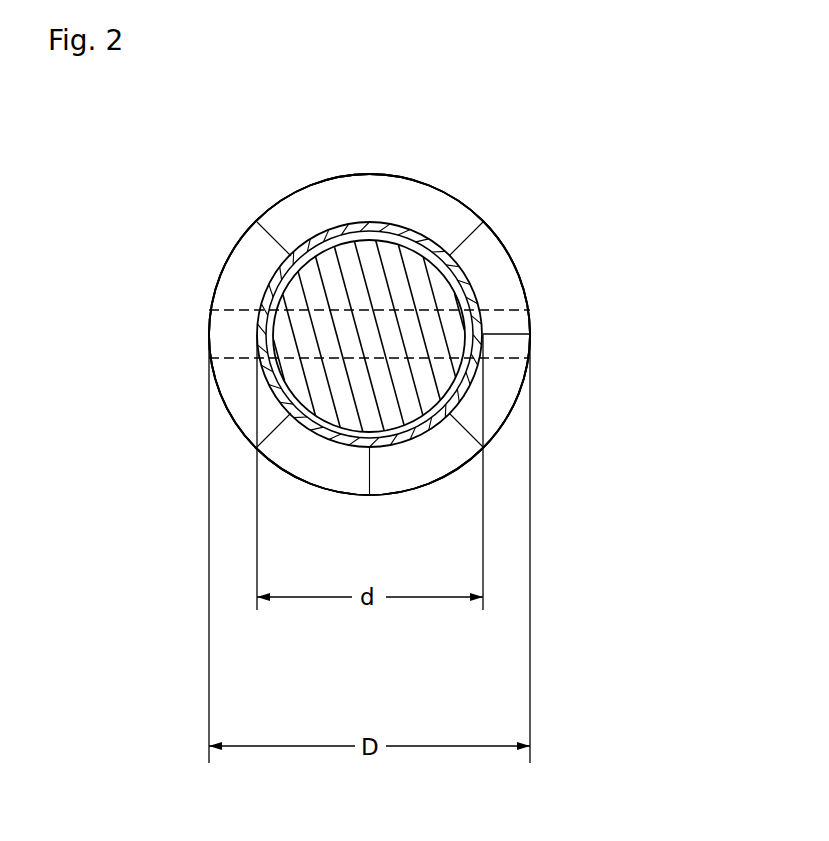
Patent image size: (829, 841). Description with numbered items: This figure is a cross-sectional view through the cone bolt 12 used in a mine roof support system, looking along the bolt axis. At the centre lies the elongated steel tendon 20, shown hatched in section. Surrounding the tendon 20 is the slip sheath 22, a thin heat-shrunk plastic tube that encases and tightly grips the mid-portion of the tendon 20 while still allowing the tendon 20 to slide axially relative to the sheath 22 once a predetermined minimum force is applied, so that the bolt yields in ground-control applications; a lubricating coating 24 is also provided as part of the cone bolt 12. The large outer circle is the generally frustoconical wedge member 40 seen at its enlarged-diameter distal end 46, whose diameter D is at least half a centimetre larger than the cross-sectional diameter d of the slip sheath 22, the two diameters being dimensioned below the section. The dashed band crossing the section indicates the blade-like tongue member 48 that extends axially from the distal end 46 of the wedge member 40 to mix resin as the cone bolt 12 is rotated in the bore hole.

The cone bolt 12 is at (545, 299).
The elongated steel tendon 20 is at (310, 272).
The slip sheath 22 is at (430, 240).
The lubricating coating 24 is at (273, 300).
The wedge member 40 is at (410, 198).
The distal end 46 is at (260, 217).
The tongue member 48 is at (503, 348).